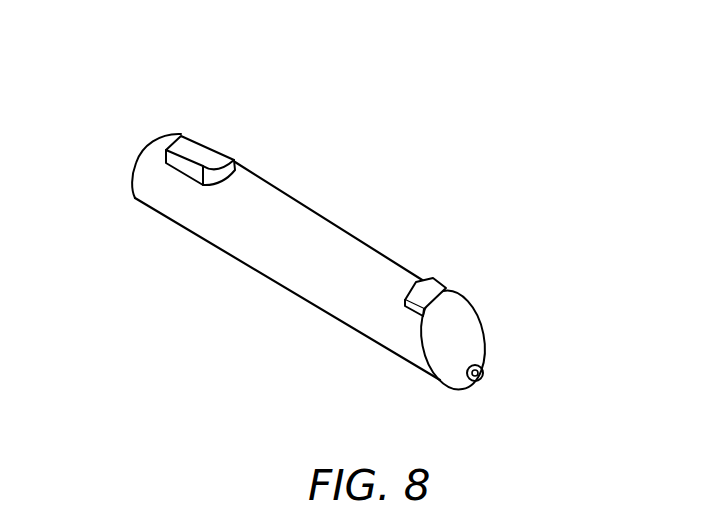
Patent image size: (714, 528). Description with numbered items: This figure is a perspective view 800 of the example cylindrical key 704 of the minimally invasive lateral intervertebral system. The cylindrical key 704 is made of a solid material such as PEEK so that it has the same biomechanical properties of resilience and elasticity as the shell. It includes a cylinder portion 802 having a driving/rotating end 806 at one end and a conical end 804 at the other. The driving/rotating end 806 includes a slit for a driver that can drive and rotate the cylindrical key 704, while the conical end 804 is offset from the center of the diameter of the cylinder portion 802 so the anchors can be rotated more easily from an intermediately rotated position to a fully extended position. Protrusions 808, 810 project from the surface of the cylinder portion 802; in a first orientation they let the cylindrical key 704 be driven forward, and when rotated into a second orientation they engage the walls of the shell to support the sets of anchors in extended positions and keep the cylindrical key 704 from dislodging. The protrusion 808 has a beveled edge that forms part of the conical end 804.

The perspective view 800 is at (403, 125).
The cylinder portion 802 is at (303, 262).
The cylindrical key 704 is at (312, 212).
The driving/rotating end 806 is at (138, 158).
The protrusion 810 is at (200, 157).
The protrusion 808 is at (433, 278).
The conical end 804 is at (485, 372).